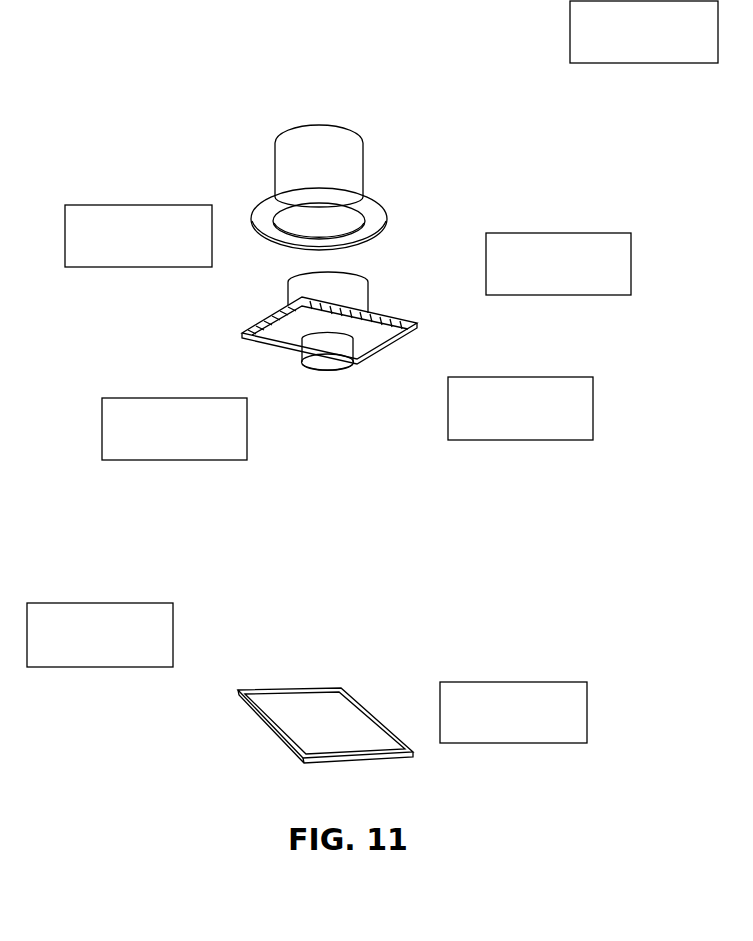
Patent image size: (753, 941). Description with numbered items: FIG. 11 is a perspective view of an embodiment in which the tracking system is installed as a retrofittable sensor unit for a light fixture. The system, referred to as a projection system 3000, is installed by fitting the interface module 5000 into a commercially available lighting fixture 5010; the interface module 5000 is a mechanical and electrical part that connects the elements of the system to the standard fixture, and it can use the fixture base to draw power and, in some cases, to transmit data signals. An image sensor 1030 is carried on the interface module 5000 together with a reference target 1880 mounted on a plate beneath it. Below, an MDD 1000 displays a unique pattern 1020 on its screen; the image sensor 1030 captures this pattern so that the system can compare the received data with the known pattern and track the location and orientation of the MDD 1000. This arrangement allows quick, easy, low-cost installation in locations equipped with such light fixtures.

The projection system 3000 is at (447, 83).
The lighting fixture 5010 is at (373, 217).
The interface module 5000 is at (297, 292).
The reference target 1880 is at (282, 353).
The image sensor 1030 is at (338, 370).
The MDD 1000 is at (240, 688).
The unique pattern 1020 is at (342, 717).